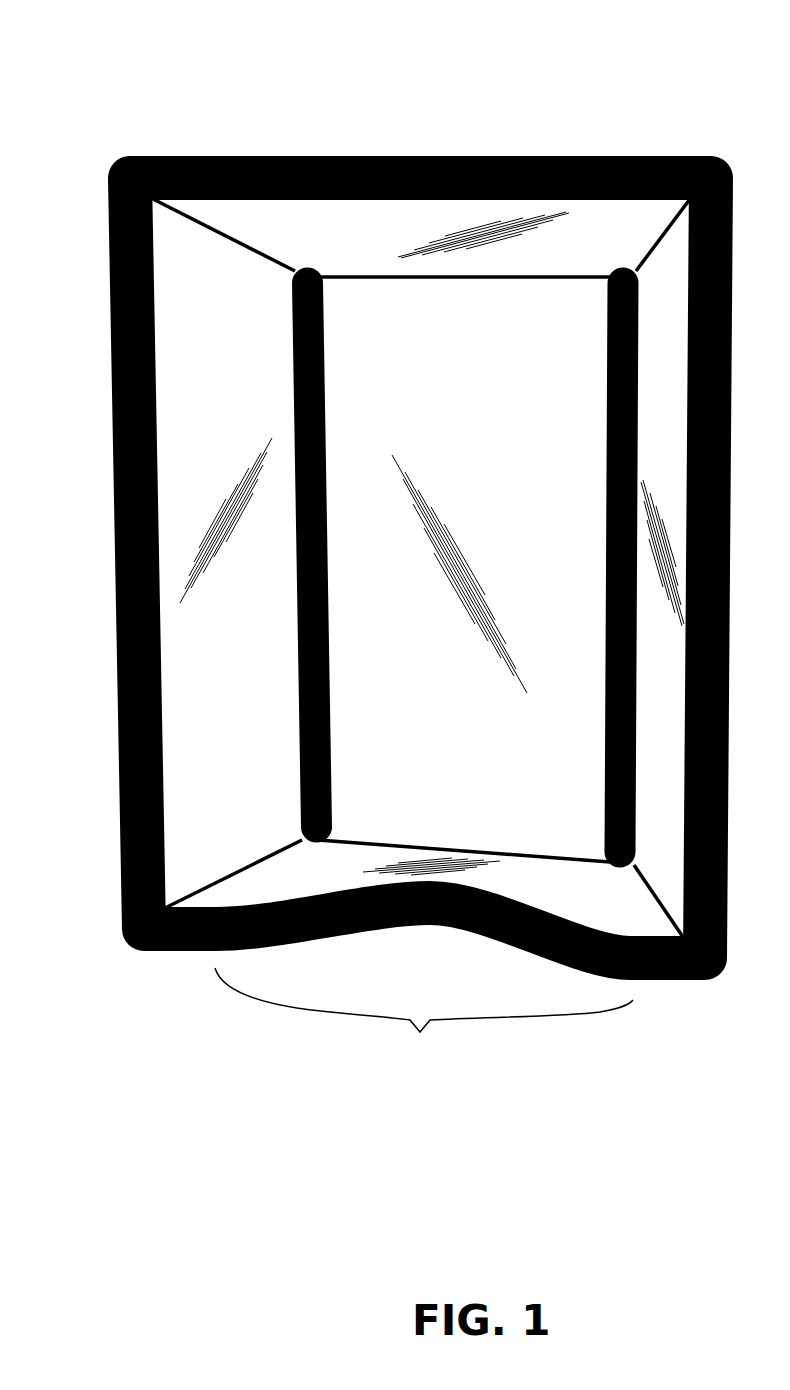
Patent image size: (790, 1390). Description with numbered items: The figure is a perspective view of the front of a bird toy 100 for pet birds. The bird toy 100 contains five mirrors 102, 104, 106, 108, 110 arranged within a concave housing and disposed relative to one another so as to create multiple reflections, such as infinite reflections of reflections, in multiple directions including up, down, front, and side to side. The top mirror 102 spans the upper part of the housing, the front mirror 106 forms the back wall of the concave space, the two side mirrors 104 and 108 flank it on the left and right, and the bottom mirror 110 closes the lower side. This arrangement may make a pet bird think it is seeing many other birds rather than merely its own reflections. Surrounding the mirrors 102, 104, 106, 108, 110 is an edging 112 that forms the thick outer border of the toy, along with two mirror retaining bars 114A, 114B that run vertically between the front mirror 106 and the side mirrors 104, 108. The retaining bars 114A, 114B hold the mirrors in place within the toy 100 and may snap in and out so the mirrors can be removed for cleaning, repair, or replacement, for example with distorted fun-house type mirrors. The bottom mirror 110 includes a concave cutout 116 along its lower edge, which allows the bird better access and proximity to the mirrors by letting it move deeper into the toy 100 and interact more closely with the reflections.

The bird toy 100 is at (603, 97).
The mirror 102 is at (332, 244).
The mirror 104 is at (237, 397).
The mirror 106 is at (467, 412).
The mirror 108 is at (689, 371).
The bottom mirror 110 is at (615, 899).
The edging 112 is at (120, 732).
The retaining bar 114A is at (300, 763).
The retaining bar 114B is at (606, 775).
The concave cutout 116 is at (424, 1020).